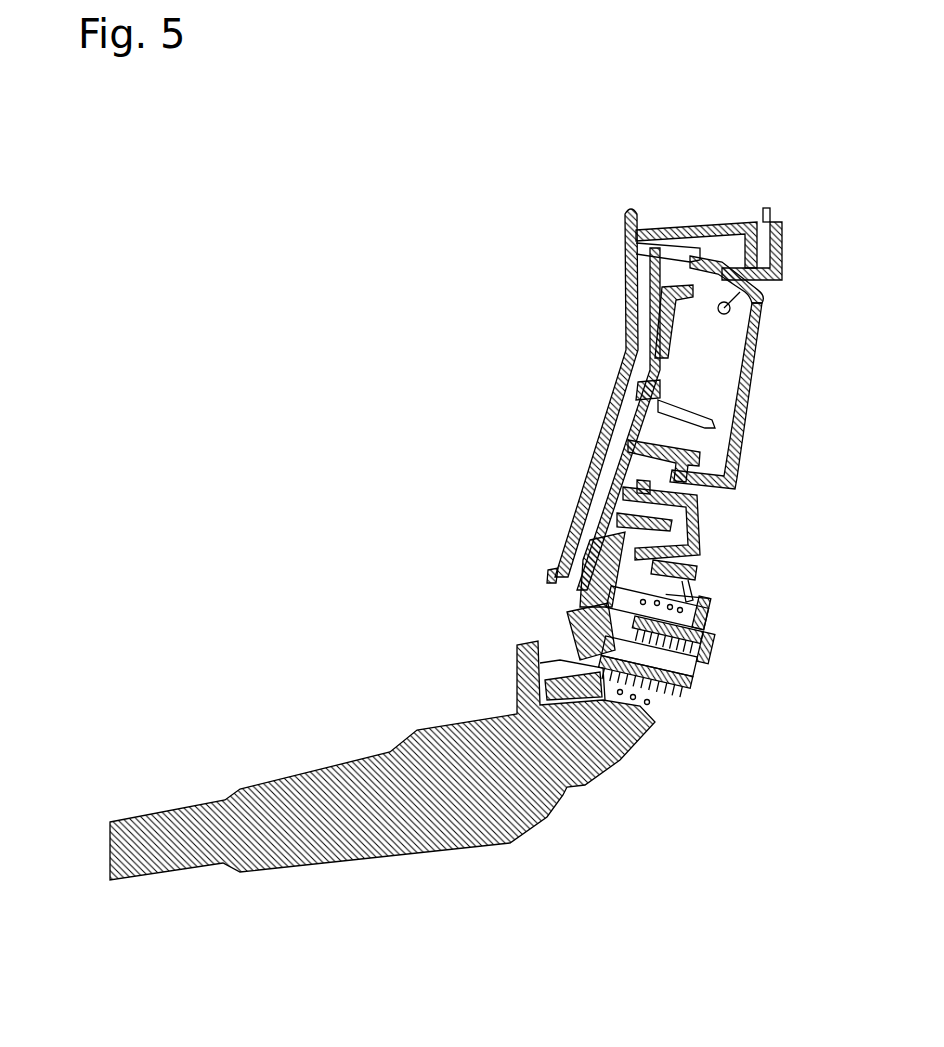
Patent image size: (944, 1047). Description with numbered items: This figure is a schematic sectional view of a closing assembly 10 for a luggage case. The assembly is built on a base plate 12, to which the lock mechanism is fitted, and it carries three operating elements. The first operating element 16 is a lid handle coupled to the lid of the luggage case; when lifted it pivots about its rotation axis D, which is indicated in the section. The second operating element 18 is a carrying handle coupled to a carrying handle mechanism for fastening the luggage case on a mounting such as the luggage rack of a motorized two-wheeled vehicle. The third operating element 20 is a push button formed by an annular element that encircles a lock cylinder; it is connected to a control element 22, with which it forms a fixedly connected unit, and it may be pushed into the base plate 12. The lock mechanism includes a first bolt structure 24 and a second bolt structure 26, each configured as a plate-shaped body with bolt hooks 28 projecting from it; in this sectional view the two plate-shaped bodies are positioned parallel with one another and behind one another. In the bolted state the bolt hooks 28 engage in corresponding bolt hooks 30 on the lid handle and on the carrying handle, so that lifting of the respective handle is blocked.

The closing assembly 10 is at (316, 293).
The base plate 12 is at (543, 823).
The first operating element 16 is at (762, 338).
The second operating element 18 is at (700, 555).
The third operating element 20 is at (708, 630).
The control element 22 is at (557, 637).
The first bolt structure 24 is at (580, 550).
The second bolt structure 26 is at (590, 498).
The bolt hooks 28 is at (703, 445).
The bolt hooks 30 is at (690, 468).
The rotation axis D is at (747, 283).